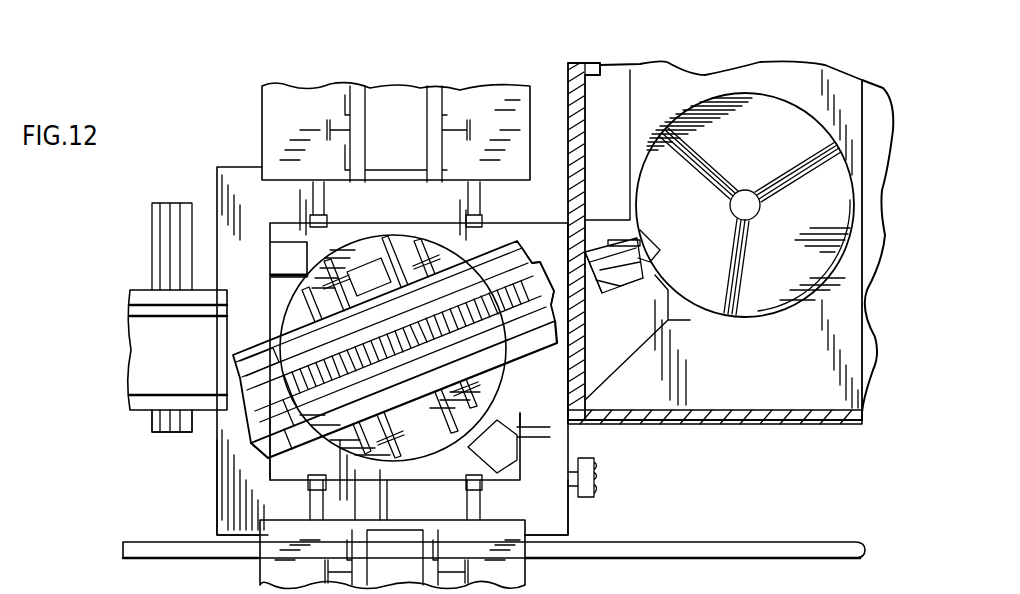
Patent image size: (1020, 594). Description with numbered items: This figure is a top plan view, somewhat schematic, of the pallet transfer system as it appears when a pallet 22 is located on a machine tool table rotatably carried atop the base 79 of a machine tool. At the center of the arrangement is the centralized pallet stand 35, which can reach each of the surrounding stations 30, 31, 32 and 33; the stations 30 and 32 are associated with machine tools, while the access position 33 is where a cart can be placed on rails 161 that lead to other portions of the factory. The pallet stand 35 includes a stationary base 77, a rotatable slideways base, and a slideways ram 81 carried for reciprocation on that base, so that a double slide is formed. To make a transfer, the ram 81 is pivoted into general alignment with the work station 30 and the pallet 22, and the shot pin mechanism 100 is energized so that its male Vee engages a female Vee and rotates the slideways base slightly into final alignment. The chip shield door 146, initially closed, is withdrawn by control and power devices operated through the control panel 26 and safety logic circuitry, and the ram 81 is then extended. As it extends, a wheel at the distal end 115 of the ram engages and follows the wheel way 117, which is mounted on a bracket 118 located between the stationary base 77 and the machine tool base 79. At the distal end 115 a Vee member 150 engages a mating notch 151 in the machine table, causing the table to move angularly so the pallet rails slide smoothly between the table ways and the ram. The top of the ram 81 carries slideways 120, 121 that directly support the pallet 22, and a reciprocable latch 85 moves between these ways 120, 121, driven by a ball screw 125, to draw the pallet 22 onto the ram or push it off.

The pallet 22 is at (757, 154).
The control panel 26 is at (596, 472).
The work station 30 is at (806, 310).
The station 31 is at (396, 137).
The work station 32 is at (174, 351).
The access position 33 is at (395, 567).
The centralized pallet stand 35 is at (584, 522).
The stationary base 77 is at (254, 507).
The machine tool base 79 is at (668, 111).
The slideways ram 81 is at (277, 430).
The reciprocable latch 85 is at (258, 404).
The shot pin mechanism 100 is at (509, 465).
The distal end of the ram 115 is at (548, 283).
The wheel way 117 is at (628, 265).
The bracket 118 is at (628, 343).
The slideway 120 is at (480, 272).
The slideway 121 is at (520, 337).
The ball screw 125 is at (393, 348).
The chip shield door 146 is at (580, 123).
The Vee member 150 is at (583, 318).
The notch 151 is at (650, 244).
The rails 161 is at (716, 545).